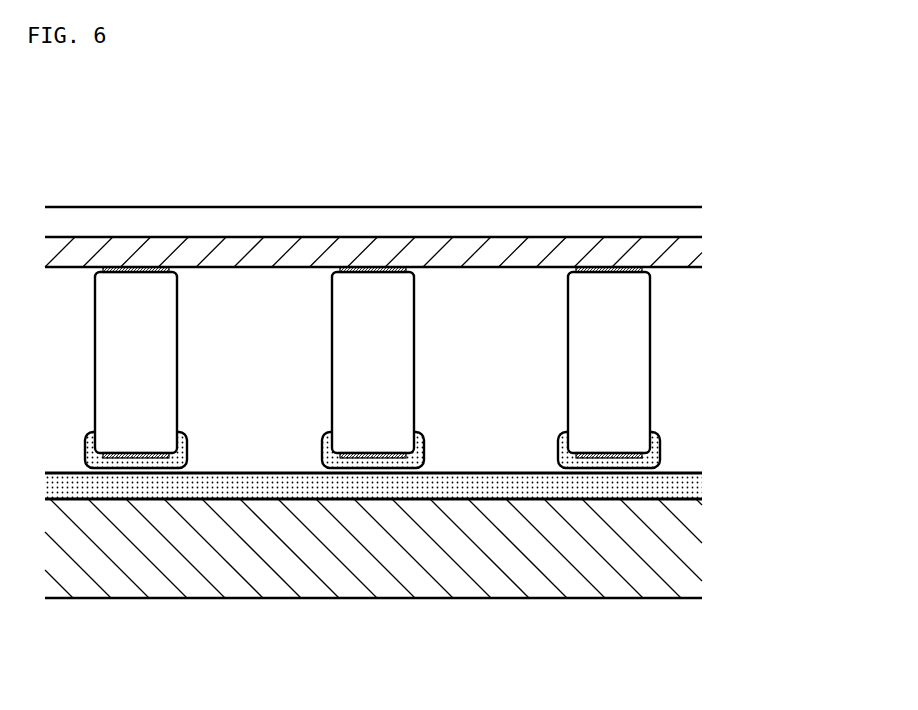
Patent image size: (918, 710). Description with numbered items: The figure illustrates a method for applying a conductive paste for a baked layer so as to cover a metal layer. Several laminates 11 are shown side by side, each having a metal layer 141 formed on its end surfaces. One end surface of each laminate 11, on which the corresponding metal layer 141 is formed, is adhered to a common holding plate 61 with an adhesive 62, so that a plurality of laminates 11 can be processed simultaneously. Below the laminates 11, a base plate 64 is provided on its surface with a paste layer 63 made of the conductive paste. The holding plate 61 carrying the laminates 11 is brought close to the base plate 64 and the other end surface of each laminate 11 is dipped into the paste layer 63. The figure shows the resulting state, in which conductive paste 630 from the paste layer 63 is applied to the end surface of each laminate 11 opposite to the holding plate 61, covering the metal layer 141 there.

The laminate 11 is at (178, 360).
The metal layer 141 is at (174, 270).
The holding plate 61 is at (693, 221).
The adhesive 62 is at (695, 256).
The paste layer 63 is at (698, 492).
The conductive paste 630 is at (190, 447).
The base plate 64 is at (693, 560).